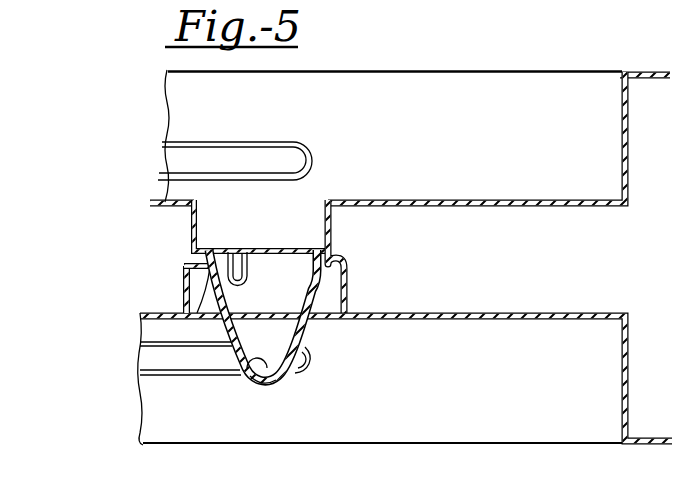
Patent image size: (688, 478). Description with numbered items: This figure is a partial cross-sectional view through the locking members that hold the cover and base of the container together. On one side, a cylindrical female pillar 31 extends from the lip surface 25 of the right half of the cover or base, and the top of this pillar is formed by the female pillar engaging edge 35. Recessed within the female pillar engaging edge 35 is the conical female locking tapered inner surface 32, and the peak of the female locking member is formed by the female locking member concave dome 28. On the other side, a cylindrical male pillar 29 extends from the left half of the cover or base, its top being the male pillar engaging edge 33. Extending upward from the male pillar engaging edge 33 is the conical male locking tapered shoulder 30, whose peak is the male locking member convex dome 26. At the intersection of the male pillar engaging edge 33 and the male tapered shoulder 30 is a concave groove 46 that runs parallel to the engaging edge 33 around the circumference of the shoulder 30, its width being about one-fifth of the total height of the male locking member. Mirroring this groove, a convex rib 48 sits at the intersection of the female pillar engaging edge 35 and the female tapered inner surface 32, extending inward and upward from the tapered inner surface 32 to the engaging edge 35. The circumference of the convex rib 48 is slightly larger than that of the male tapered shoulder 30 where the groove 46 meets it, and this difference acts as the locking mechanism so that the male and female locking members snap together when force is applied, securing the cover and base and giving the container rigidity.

The lip surface 25 is at (152, 312).
The male locking member convex dome 26 is at (242, 376).
The female locking member concave dome 28 is at (270, 384).
The male pillar 29 is at (193, 217).
The male locking tapered shoulder 30 is at (236, 340).
The female pillar 31 is at (183, 288).
The female locking tapered inner surface 32 is at (310, 333).
The male pillar engaging edge 33 is at (197, 250).
The female pillar engaging edge 35 is at (190, 263).
The concave groove 46 is at (235, 305).
The convex rib 48 is at (197, 313).